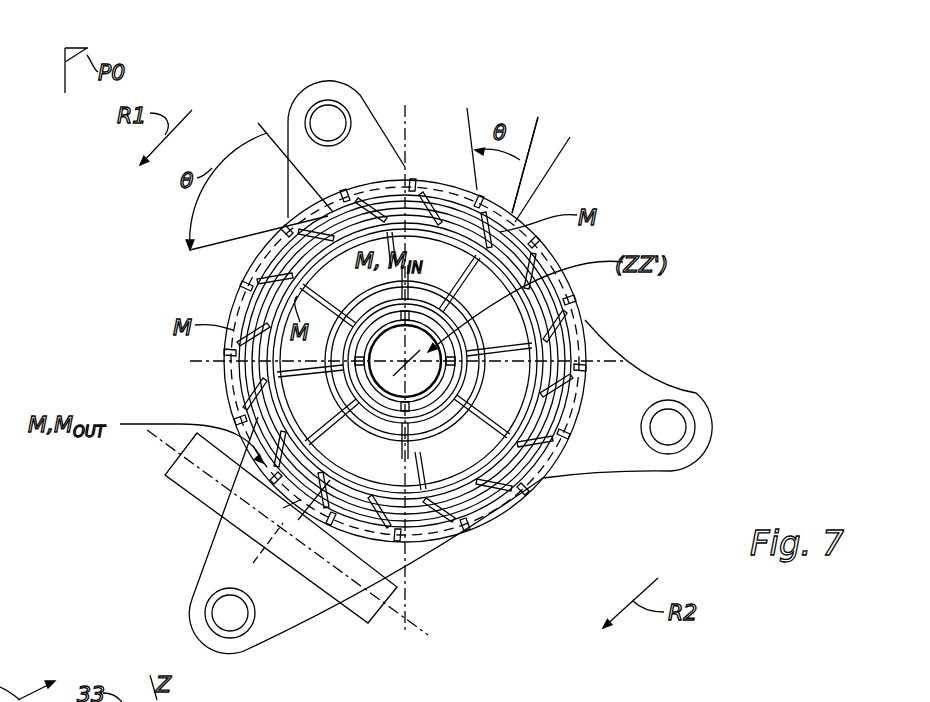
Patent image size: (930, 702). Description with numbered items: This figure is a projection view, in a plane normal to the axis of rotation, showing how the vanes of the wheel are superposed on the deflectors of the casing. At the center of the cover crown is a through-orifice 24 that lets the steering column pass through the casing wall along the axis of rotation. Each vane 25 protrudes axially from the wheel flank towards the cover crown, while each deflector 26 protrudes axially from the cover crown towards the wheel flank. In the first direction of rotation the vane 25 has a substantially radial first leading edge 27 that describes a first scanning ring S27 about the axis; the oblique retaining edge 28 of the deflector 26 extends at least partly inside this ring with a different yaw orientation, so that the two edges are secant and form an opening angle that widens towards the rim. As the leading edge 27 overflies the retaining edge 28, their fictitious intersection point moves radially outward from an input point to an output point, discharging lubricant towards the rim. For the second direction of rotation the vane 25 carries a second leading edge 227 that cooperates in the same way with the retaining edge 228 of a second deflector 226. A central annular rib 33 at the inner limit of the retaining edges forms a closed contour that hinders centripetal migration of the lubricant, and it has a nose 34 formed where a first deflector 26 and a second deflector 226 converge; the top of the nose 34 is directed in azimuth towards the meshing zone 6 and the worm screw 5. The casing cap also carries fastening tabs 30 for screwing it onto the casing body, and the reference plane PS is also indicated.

The worm screw 5 is at (172, 470).
The meshing zone 6 is at (283, 508).
The through-orifice 24 is at (480, 338).
The vane 25 is at (333, 208).
The deflector 26 is at (350, 185).
The first leading edge 27 is at (377, 182).
The retaining edge 28 is at (238, 297).
The fastening tabs 30 is at (303, 108).
The central annular rib 33 is at (518, 296).
The nose 34 is at (299, 513).
The second deflector 226 is at (540, 247).
The second leading edge 227 is at (590, 372).
The retaining edge of second deflector 228 is at (592, 378).
The first scanning ring S27 is at (366, 200).
The reference plane PS is at (570, 137).